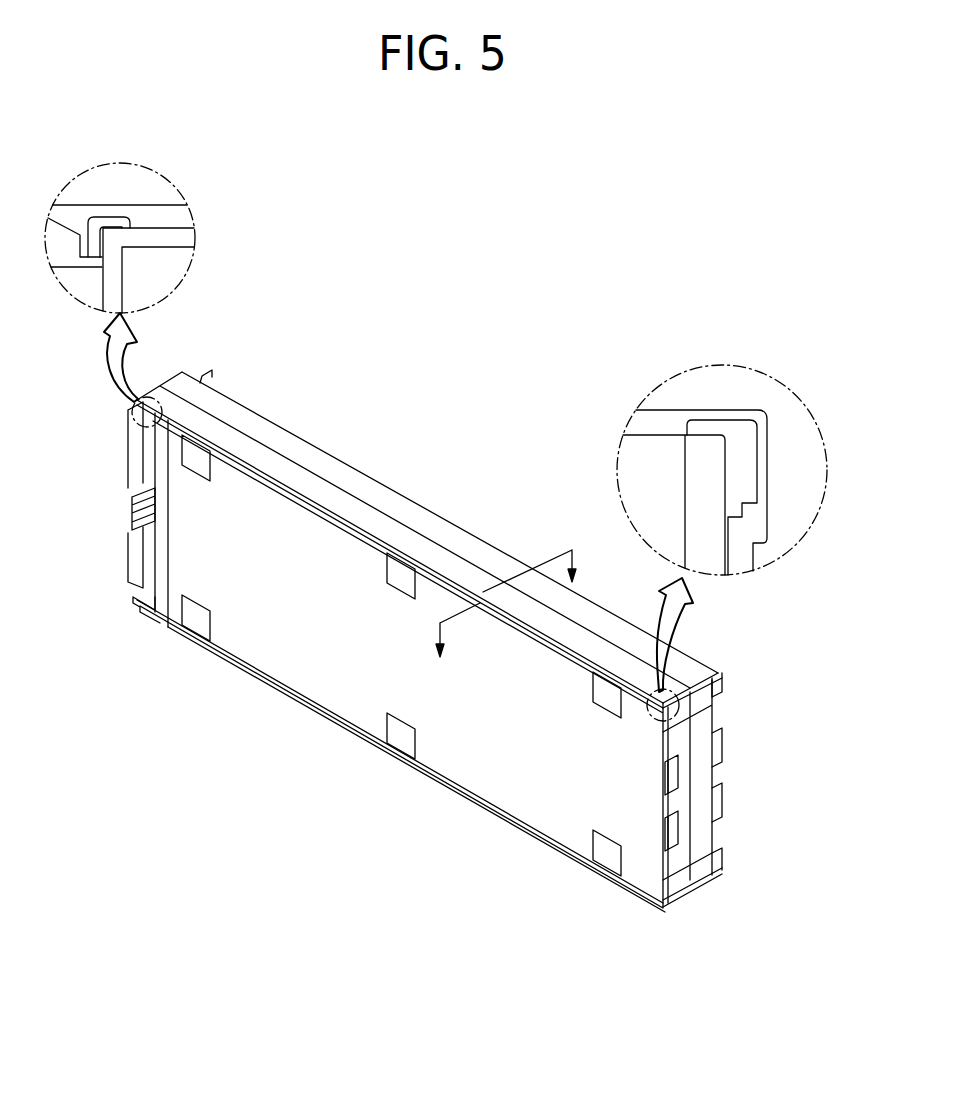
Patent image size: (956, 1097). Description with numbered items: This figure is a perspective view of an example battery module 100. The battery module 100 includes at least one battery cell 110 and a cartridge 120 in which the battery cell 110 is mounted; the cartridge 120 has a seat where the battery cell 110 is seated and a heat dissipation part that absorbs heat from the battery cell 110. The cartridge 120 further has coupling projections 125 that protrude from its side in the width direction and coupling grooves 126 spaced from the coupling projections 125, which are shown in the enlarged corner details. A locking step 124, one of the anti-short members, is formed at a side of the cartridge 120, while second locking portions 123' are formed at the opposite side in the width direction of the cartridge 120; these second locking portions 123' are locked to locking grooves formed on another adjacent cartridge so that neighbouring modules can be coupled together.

The battery module 100 is at (713, 146).
The battery cell 110 is at (178, 265).
The cartridge 120 is at (150, 210).
The second locking portion 123' is at (748, 775).
The locking step 124 is at (133, 499).
The coupling projection 125 is at (723, 678).
The coupling groove 126 is at (100, 222).